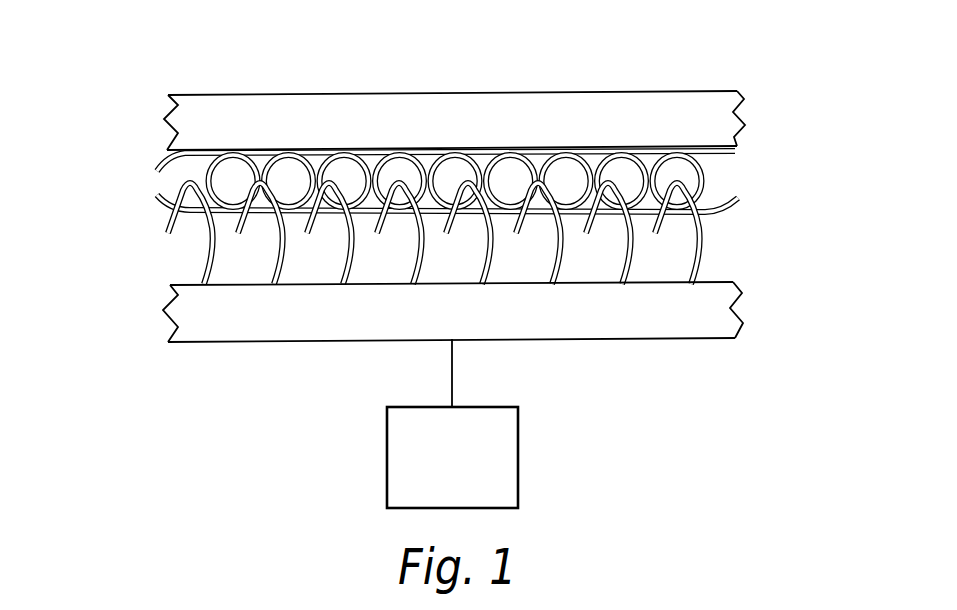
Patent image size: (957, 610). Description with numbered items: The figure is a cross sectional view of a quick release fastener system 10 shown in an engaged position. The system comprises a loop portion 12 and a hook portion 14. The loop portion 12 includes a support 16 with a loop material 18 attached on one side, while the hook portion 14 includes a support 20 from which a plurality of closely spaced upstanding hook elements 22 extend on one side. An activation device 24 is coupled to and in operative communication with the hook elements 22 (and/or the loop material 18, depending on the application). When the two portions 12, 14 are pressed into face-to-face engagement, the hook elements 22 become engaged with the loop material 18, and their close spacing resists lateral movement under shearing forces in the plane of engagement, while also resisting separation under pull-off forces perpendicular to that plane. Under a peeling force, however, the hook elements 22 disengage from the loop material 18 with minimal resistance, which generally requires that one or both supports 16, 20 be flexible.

The quick release fastener system 10 is at (454, 263).
The loop portion 12 is at (445, 138).
The hook portion 14 is at (456, 281).
The support 16 is at (715, 125).
The loop material 18 is at (703, 170).
The support 20 is at (715, 310).
The hook elements 22 is at (703, 237).
The activation device 24 is at (510, 472).